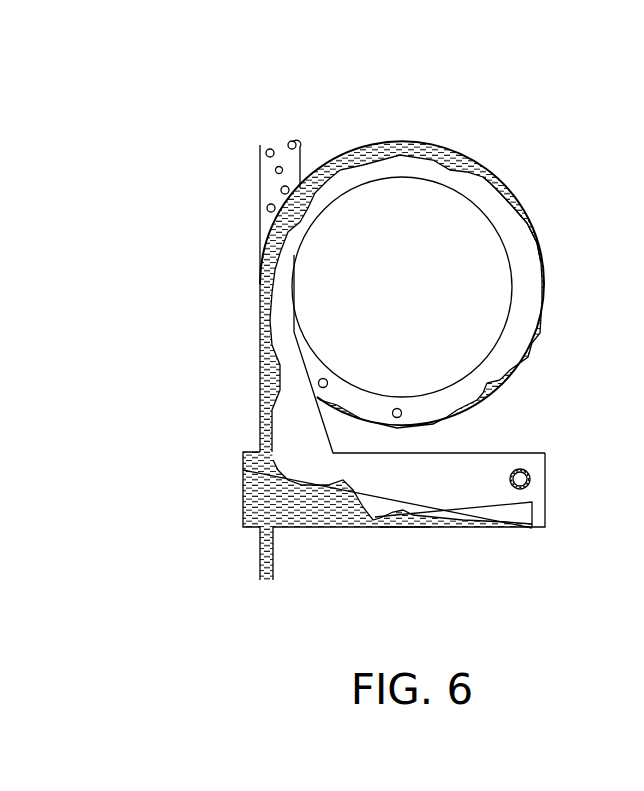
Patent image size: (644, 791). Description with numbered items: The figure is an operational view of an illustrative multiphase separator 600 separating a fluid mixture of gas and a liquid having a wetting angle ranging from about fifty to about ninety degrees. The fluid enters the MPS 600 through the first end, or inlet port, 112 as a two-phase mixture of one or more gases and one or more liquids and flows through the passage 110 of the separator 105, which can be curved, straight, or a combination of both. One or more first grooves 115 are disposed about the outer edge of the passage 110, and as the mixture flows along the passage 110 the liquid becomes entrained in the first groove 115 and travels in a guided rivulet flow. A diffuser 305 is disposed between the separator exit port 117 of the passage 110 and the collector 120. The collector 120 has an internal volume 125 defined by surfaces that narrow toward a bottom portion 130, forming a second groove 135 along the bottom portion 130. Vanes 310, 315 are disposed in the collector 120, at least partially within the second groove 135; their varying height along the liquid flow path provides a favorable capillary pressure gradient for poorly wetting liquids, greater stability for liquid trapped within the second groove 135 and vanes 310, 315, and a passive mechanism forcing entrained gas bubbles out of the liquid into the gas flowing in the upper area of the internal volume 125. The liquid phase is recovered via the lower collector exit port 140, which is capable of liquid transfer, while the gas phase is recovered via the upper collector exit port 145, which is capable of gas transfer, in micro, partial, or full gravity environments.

The multiphase separator 600 is at (170, 66).
The passage 110 is at (276, 128).
The separator 105 is at (449, 142).
The first end 112 is at (260, 145).
The first groove 115 is at (483, 172).
The separator exit port 117 is at (297, 332).
The vane 315 is at (260, 363).
The diffuser 305 is at (260, 420).
The collector 120 is at (243, 497).
The lower collector exit port 140 is at (260, 562).
The internal volume 125 is at (433, 460).
The upper collector exit port 145 is at (530, 472).
The second groove 135 is at (336, 521).
The bottom portion 130 is at (403, 529).
The vane 310 is at (395, 502).